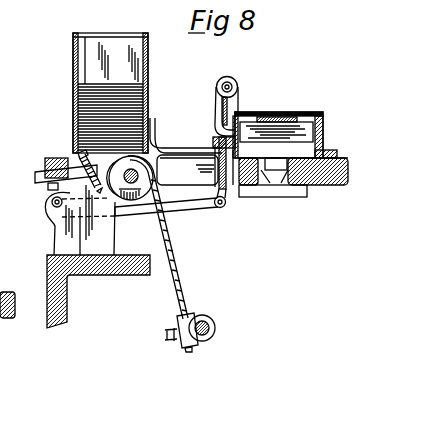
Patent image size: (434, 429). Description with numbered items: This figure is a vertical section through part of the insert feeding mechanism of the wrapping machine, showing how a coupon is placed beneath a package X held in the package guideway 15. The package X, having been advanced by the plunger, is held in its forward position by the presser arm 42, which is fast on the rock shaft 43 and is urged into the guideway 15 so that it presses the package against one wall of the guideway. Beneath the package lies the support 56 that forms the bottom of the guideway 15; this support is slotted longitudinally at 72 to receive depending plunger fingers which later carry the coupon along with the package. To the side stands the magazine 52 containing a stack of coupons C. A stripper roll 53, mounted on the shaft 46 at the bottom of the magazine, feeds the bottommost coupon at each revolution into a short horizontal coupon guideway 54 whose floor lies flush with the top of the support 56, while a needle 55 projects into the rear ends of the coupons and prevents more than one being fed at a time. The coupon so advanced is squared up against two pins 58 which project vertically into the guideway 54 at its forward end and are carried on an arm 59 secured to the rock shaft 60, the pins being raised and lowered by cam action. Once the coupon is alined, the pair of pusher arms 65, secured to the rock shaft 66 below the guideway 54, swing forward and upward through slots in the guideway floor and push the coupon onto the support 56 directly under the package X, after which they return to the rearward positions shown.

The magazine 52 is at (73, 63).
The coupons C is at (80, 109).
The coupon guideway 54 is at (155, 144).
The presser arm 42 is at (215, 113).
The rock shaft 43 is at (231, 83).
The package X is at (324, 135).
The guideway 15 is at (293, 150).
The support 56 is at (298, 181).
The slots 72 is at (274, 178).
The pins 58 is at (229, 197).
The arm 59 is at (186, 210).
The stripper roll 53 is at (123, 203).
The shaft 46 is at (120, 186).
The pusher arms 65 is at (173, 293).
The rock shaft 66 is at (204, 341).
The needle 55 is at (80, 156).
The rock shaft 60 is at (46, 208).